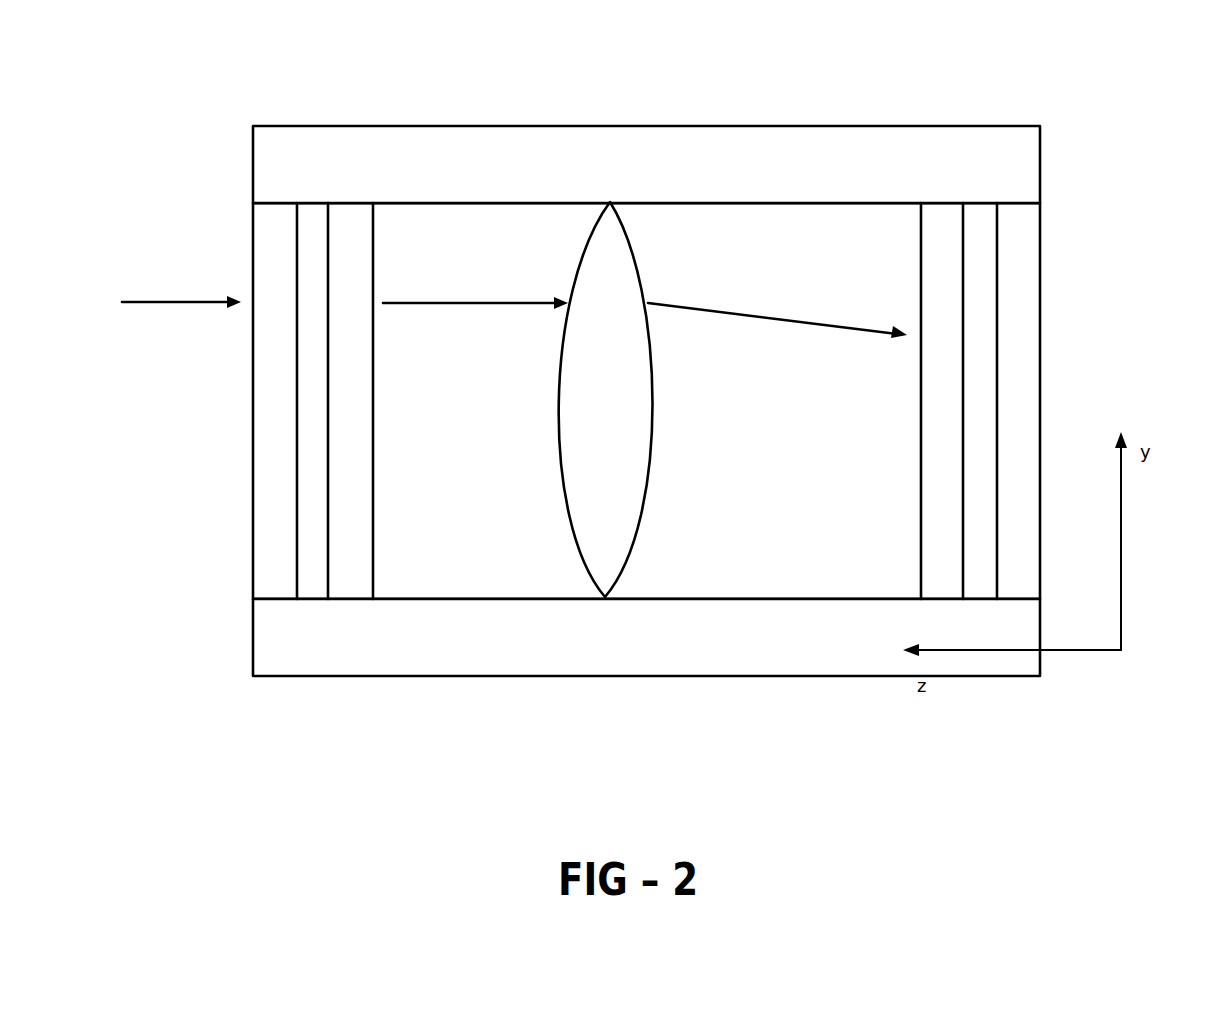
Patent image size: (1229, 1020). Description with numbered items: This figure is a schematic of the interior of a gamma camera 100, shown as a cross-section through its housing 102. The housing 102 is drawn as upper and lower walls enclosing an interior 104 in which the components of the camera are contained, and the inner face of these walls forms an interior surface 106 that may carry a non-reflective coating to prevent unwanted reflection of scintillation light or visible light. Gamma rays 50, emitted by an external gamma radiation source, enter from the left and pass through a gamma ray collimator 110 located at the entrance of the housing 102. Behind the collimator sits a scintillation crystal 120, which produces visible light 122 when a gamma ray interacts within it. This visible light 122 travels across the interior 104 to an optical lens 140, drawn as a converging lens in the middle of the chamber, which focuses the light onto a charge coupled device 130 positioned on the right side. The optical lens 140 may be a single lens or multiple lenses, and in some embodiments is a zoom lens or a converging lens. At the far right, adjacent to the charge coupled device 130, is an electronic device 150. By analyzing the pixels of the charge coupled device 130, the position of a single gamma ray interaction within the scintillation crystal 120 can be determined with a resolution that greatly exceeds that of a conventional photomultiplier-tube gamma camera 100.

The gamma rays 50 is at (150, 300).
The gamma camera 100 is at (1051, 95).
The housing 102 is at (462, 141).
The interior 104 is at (727, 250).
The interior surface 106 is at (840, 214).
The gamma ray collimator 110 is at (270, 503).
The scintillation crystal 120 is at (360, 523).
The visible light 122 is at (470, 300).
The charge coupled device 130 is at (938, 500).
The optical lens 140 is at (612, 539).
The electronic device 150 is at (1000, 317).